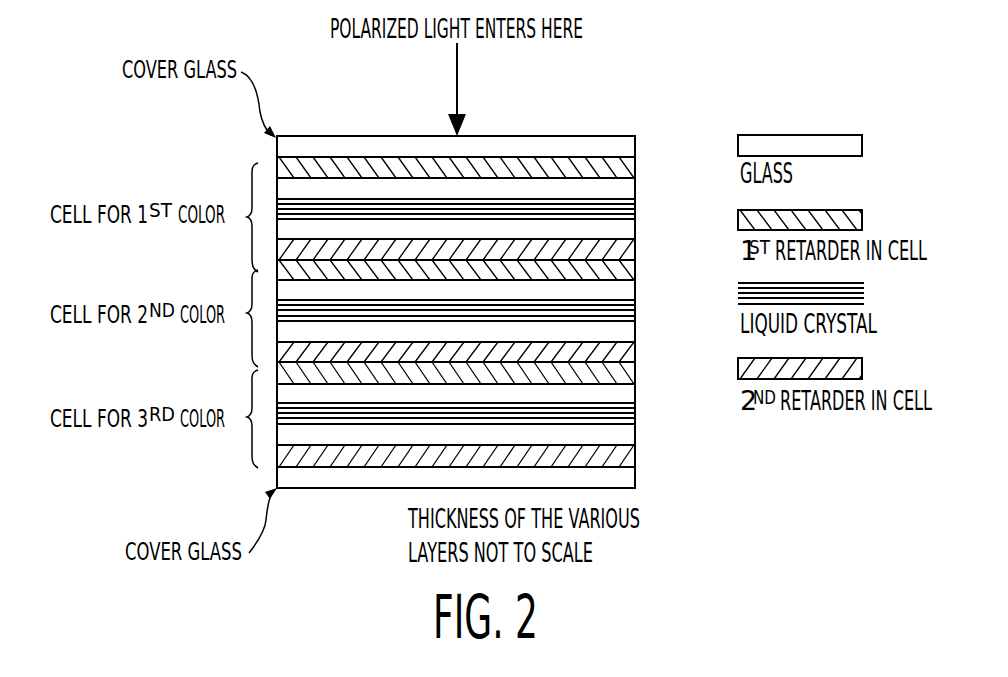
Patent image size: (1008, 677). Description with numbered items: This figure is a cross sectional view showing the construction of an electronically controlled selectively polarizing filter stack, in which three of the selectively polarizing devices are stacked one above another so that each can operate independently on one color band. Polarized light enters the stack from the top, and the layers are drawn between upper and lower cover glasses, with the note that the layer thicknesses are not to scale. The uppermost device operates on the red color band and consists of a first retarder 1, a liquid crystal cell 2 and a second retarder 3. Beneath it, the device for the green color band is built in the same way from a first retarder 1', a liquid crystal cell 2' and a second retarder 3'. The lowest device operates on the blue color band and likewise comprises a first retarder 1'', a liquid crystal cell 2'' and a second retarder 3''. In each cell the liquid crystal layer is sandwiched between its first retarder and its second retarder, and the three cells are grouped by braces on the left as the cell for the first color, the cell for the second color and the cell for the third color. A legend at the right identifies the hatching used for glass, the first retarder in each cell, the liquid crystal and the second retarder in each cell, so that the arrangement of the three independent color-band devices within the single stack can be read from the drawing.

The first retarder 1 is at (478, 162).
The liquid crystal cell 2 is at (486, 206).
The second retarder 3 is at (478, 242).
The first retarder 1' is at (495, 267).
The liquid crystal cell 2' is at (490, 309).
The second retarder 3' is at (497, 347).
The first retarder 1'' is at (486, 370).
The liquid crystal cell 2'' is at (493, 410).
The second retarder 3'' is at (486, 452).